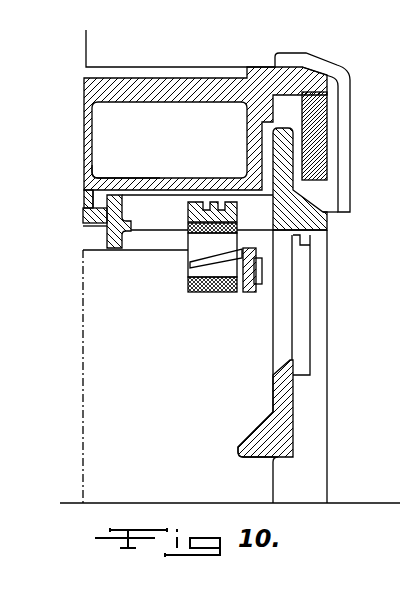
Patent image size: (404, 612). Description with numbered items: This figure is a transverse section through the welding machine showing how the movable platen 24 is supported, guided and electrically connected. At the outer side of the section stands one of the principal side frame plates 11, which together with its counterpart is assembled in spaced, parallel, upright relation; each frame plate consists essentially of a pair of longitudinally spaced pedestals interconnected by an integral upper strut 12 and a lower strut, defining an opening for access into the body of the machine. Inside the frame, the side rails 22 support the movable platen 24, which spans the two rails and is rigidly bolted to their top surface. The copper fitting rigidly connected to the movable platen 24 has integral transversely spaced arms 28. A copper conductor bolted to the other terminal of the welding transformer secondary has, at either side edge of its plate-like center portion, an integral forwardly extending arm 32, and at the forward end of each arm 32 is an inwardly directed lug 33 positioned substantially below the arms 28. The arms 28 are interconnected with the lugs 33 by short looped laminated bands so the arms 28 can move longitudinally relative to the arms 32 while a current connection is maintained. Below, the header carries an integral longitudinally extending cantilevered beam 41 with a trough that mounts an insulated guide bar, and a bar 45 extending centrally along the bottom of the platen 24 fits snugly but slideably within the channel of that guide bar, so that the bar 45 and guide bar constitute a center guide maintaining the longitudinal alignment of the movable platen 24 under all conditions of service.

The side frame plate 11 is at (310, 400).
The upper strut 12 is at (328, 218).
The side rail 22 is at (330, 93).
The movable platen 24 is at (167, 90).
The arm 28 is at (165, 229).
The arm 32 is at (252, 292).
The lug 33 is at (188, 270).
The cantilevered beam 41 is at (93, 236).
The bar 45 is at (103, 174).